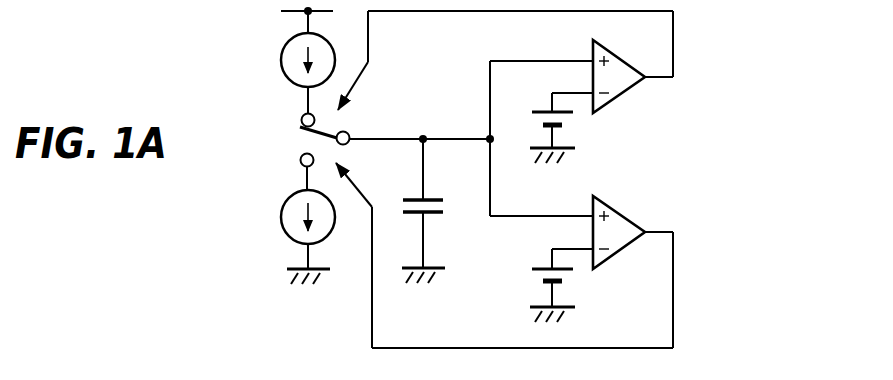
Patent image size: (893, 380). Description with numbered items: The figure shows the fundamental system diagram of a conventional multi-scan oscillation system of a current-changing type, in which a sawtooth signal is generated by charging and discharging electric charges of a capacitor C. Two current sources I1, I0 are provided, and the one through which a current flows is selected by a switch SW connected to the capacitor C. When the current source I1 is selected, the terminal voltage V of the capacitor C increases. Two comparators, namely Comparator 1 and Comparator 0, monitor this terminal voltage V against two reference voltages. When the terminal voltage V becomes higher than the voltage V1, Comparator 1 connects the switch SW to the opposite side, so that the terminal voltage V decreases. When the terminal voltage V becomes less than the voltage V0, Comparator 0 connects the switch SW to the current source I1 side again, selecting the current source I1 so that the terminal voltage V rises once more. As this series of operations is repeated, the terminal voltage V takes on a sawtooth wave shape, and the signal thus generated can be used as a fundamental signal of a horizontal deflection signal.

The current source I1 is at (291, 62).
The current source I0 is at (291, 225).
The switch SW is at (305, 140).
The terminal voltage V is at (456, 126).
The capacitor C is at (427, 211).
The voltage V1 is at (573, 128).
The voltage V0 is at (573, 285).
The comparator Comparator 1 is at (693, 83).
The comparator Comparator 0 is at (695, 227).